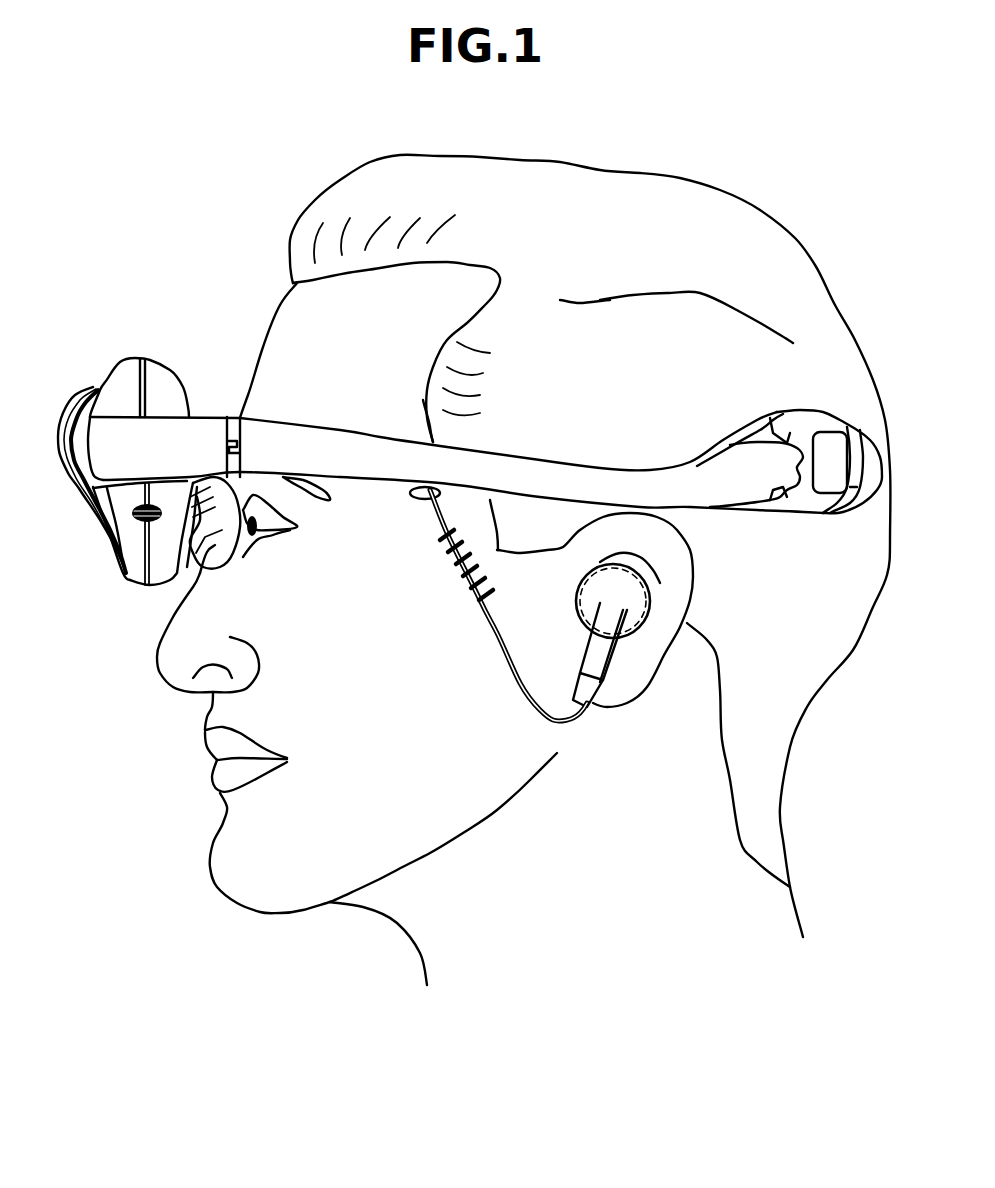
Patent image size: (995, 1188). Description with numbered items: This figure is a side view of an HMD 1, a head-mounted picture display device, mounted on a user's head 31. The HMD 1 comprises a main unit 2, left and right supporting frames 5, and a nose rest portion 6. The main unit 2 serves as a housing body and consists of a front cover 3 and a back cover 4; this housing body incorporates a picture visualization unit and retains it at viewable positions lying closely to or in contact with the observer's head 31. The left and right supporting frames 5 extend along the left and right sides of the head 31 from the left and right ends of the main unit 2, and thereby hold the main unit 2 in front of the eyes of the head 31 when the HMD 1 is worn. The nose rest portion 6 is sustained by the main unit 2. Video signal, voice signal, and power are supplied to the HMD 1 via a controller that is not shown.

The HMD 1 is at (175, 346).
The main unit 2 is at (127, 360).
The front cover 3 is at (60, 417).
The back cover 4 is at (173, 387).
The supporting frames 5 is at (573, 477).
The nose rest portion 6 is at (213, 545).
The observer's head 31 is at (743, 227).